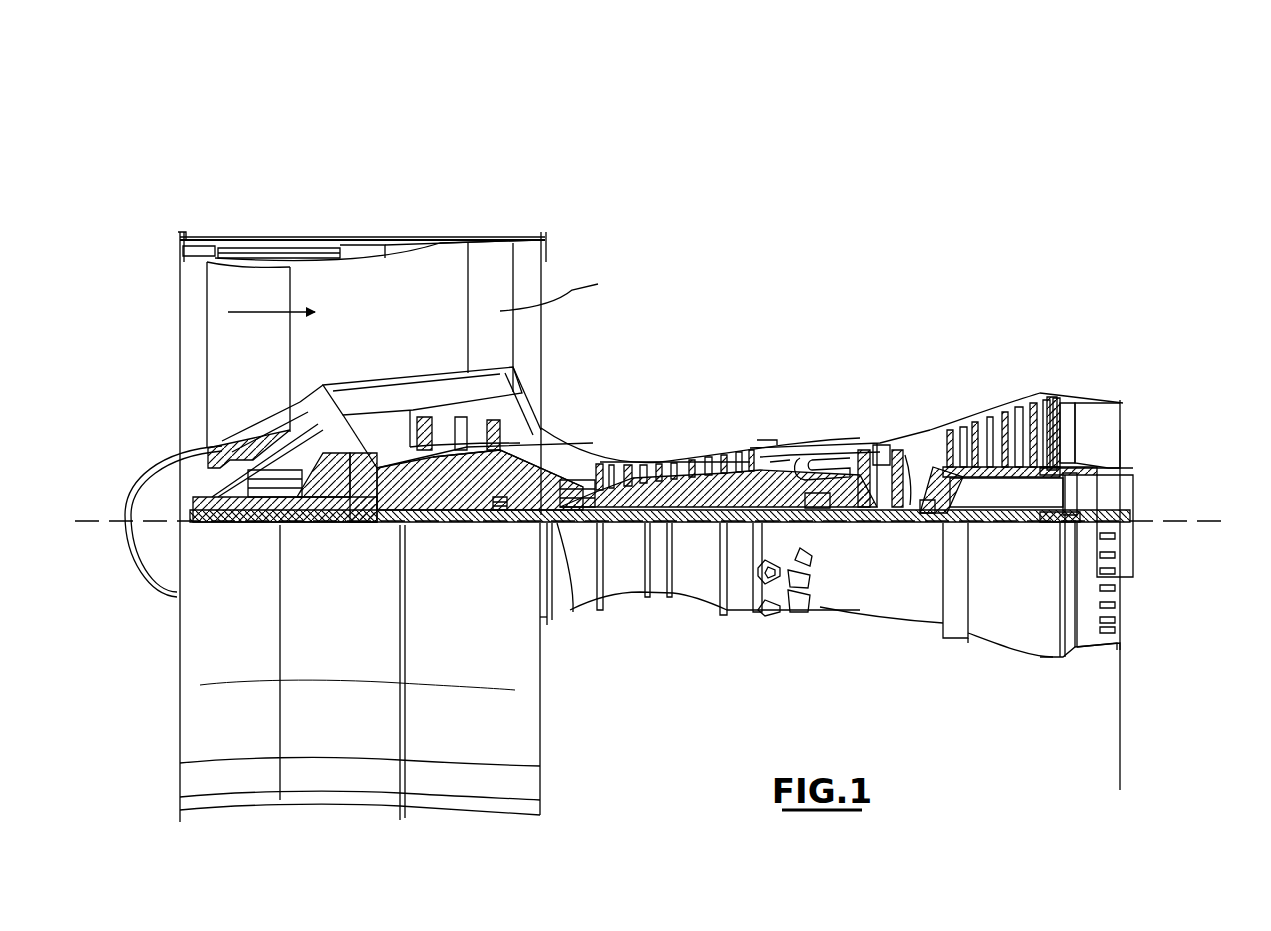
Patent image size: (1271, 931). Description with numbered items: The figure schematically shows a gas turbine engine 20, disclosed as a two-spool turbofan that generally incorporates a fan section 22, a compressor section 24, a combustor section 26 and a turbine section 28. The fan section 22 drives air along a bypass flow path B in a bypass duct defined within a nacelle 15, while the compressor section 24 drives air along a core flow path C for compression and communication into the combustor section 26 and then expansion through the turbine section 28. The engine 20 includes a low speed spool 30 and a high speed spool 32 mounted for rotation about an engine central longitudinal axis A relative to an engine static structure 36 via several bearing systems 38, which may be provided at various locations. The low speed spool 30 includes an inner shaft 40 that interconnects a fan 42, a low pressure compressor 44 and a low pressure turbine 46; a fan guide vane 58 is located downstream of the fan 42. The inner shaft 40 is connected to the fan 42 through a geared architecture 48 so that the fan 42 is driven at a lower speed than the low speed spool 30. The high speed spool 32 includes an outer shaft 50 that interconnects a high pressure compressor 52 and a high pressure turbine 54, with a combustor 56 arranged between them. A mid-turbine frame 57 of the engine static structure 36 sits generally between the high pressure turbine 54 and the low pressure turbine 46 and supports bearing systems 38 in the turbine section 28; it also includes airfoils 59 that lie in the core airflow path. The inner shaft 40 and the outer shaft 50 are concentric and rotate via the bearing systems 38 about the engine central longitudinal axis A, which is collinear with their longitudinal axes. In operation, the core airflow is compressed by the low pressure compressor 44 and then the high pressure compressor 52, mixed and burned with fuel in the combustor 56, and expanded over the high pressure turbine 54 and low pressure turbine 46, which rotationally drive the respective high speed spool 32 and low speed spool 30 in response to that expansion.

The gas turbine engine 20 is at (826, 290).
The nacelle 15 is at (362, 244).
The fan section 22 is at (292, 228).
The compressor section 24 is at (592, 430).
The combustor section 26 is at (812, 420).
The turbine section 28 is at (960, 383).
The low speed spool 30 is at (700, 530).
The high speed spool 32 is at (740, 487).
The engine static structure 36 is at (740, 612).
The bearing systems 38 is at (497, 517).
The inner shaft 40 is at (568, 590).
The fan 42 is at (262, 367).
The low pressure compressor 44 is at (460, 433).
The low pressure turbine 46 is at (1017, 415).
The geared architecture 48 is at (368, 507).
The outer shaft 50 is at (817, 495).
The high pressure compressor 52 is at (675, 493).
The high pressure turbine 54 is at (880, 438).
The combustor 56 is at (813, 463).
The mid-turbine frame 57 is at (923, 428).
The fan guide vane 58 is at (572, 289).
The airfoils 59 is at (920, 455).
The engine central longitudinal axis A is at (1222, 521).
The bypass flow path B is at (262, 310).
The core flow path C is at (358, 418).